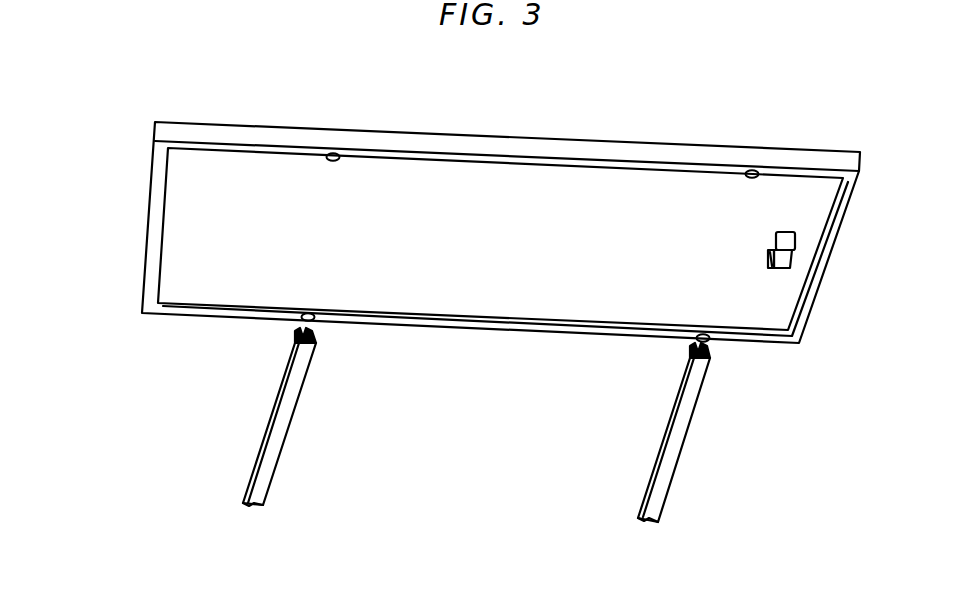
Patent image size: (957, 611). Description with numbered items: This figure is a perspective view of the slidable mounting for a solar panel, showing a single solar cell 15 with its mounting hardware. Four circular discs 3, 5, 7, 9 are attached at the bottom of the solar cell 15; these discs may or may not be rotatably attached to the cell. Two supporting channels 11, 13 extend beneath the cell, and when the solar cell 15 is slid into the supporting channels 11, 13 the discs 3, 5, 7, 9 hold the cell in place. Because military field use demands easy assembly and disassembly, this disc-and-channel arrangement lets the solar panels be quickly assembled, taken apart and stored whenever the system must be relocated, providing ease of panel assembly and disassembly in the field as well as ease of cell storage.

The circular disc 3 is at (753, 172).
The circular disc 5 is at (337, 154).
The circular disc 7 is at (710, 341).
The circular disc 9 is at (315, 319).
The supporting channel 11 is at (275, 437).
The supporting channel 13 is at (672, 452).
The solar cell 15 is at (152, 263).